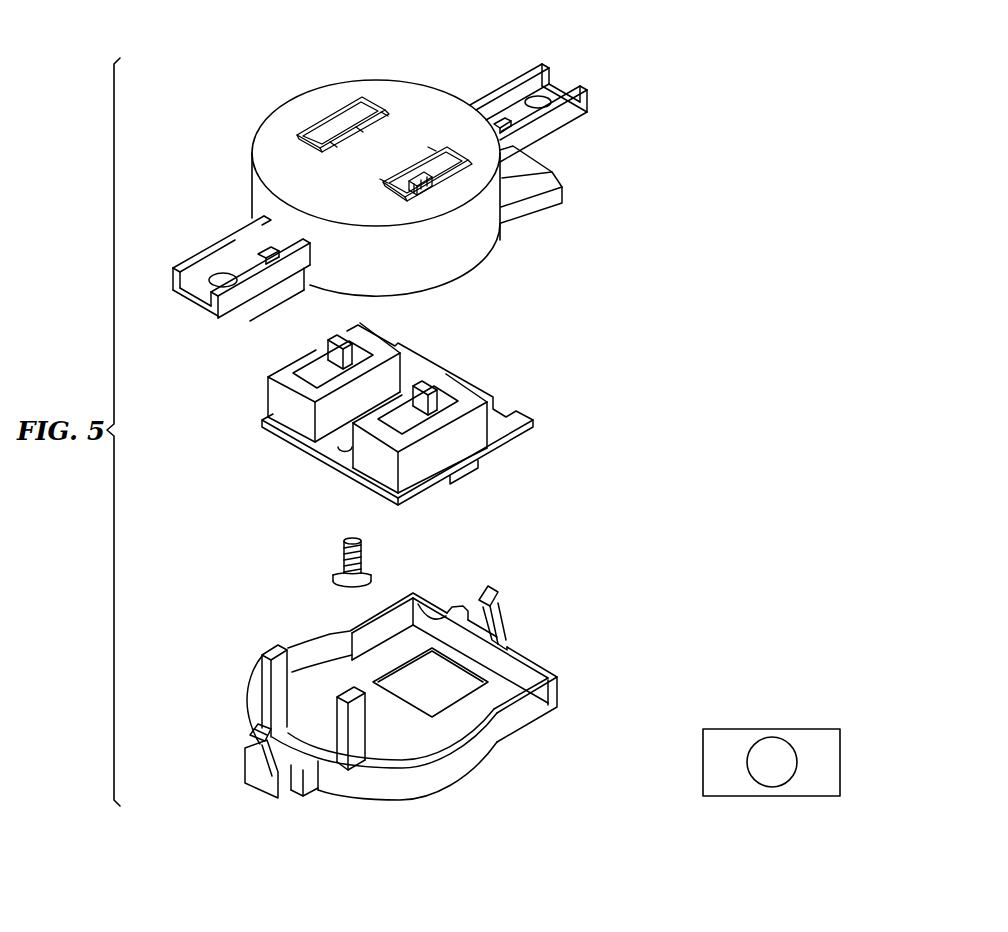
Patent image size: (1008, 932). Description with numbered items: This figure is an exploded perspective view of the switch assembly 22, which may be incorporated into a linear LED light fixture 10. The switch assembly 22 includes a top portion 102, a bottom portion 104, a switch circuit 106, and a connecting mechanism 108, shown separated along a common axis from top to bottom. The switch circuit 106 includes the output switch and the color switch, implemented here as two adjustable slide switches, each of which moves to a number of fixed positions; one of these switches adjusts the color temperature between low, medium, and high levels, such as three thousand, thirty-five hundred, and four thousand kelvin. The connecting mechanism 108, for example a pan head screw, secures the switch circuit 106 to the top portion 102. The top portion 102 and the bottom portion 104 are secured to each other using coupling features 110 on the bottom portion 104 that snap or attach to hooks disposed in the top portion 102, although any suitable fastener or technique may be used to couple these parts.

The linear LED light fixture 10 is at (771, 729).
The switch assembly 22 is at (248, 47).
The top portion 102 is at (312, 98).
The bottom portion 104 is at (442, 786).
The switch circuit 106 is at (452, 374).
The connecting mechanism 108 is at (351, 537).
The coupling features 110 is at (500, 588).